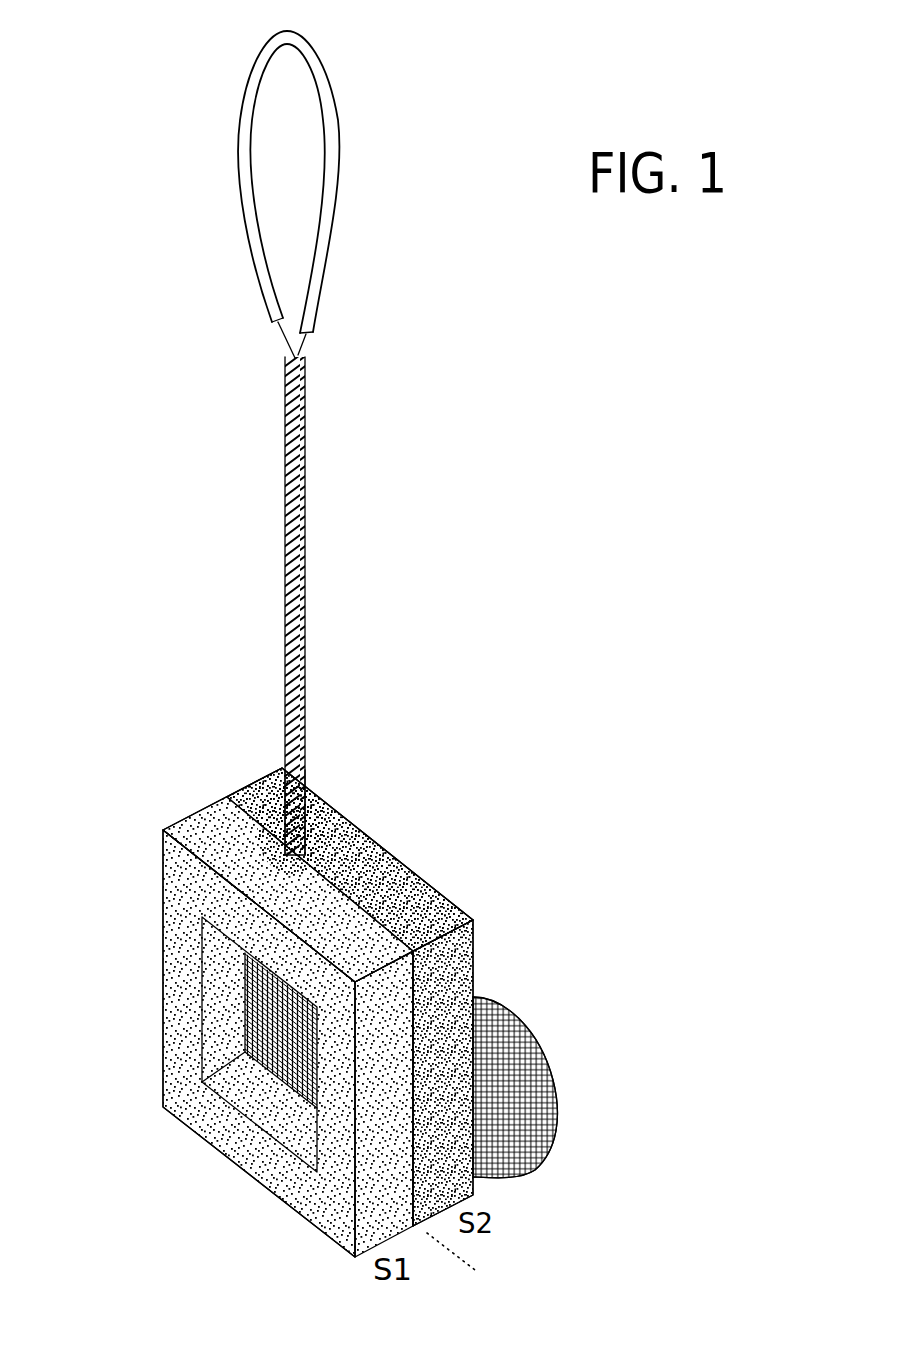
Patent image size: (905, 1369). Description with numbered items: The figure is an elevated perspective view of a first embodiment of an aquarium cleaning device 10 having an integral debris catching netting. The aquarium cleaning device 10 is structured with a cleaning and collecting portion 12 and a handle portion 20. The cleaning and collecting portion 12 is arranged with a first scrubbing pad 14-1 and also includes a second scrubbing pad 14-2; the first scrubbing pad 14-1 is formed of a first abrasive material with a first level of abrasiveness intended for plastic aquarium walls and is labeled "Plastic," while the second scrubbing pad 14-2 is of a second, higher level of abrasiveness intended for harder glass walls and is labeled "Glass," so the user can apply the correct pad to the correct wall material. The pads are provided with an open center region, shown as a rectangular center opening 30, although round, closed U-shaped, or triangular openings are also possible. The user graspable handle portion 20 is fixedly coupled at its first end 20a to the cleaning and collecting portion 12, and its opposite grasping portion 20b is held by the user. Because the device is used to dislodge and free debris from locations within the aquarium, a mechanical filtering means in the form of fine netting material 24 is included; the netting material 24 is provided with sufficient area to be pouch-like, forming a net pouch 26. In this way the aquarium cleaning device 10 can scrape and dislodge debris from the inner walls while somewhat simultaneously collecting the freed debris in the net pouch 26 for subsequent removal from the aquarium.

The aquarium cleaning device 10 is at (495, 651).
The cleaning and collecting portion 12 is at (147, 797).
The first scrubbing pad 14-1 is at (236, 1143).
The second scrubbing pad 14-2 is at (423, 883).
The handle portion 20 is at (222, 47).
The first end 20a is at (306, 765).
The grasping portion 20b is at (363, 43).
The netting material 24 is at (525, 1153).
The net pouch 26 is at (508, 974).
The center opening 30 is at (291, 1102).